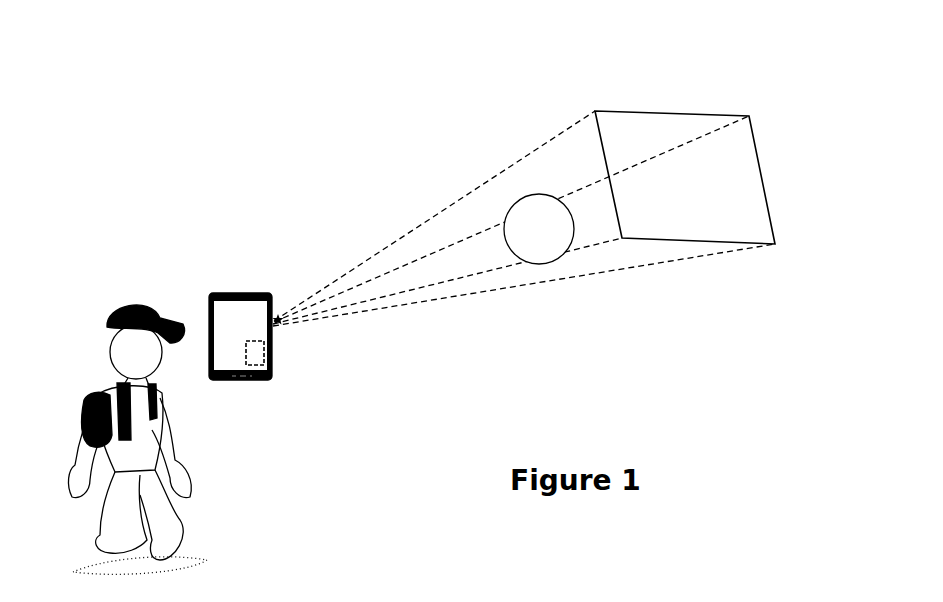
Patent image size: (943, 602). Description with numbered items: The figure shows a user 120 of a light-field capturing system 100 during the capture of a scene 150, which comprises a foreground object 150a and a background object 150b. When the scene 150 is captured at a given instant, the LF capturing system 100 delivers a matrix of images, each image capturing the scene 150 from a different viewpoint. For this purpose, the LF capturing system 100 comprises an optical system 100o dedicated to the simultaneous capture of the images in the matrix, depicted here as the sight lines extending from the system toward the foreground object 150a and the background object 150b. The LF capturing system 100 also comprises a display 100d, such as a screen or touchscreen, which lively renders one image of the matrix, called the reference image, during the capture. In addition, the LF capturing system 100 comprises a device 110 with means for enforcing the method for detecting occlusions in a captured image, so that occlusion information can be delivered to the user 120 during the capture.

The user 120 is at (125, 292).
The LF capturing system 100 is at (240, 292).
The display 100d is at (223, 357).
The device 110 is at (263, 366).
The optical system 100o is at (273, 328).
The scene 150 is at (786, 72).
The foreground object 150a is at (562, 260).
The background object 150b is at (780, 229).